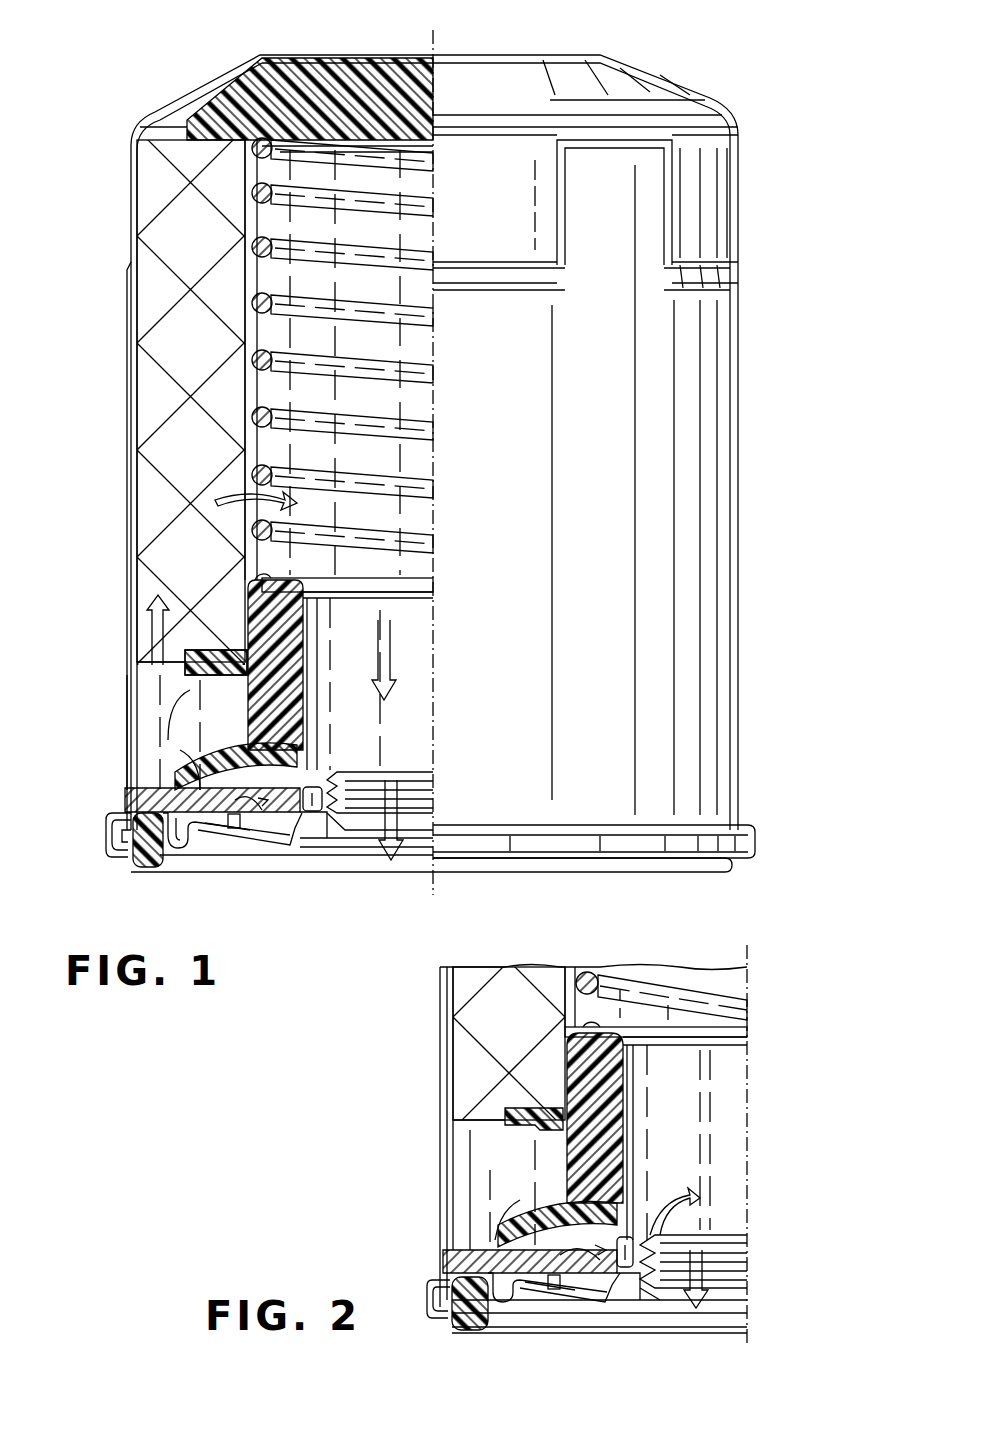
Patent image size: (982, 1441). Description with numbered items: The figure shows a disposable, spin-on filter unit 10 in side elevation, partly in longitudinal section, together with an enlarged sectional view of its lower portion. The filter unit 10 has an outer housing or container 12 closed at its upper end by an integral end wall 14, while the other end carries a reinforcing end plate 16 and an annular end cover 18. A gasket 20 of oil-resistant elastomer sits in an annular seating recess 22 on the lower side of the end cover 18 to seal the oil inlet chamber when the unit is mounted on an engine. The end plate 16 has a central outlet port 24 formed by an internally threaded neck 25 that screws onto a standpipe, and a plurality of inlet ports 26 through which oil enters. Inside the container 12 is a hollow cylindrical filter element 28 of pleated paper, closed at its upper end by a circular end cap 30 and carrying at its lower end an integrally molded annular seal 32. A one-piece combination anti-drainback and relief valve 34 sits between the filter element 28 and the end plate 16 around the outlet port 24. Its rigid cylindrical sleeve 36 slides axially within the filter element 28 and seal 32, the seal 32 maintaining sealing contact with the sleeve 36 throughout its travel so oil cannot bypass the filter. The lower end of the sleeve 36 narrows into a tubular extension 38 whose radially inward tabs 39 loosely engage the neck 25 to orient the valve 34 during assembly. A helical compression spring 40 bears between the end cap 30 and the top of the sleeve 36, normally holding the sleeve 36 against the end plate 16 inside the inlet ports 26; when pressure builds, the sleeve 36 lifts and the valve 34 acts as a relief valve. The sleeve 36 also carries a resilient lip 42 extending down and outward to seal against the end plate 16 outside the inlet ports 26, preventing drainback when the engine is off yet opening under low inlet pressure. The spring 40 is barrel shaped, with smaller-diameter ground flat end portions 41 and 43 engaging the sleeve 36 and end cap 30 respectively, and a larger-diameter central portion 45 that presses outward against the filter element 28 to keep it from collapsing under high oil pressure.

In FIG. 1, the filter unit 10 is at (818, 108).
In FIG. 1, the outer housing or container 12 is at (738, 370).
In FIG. 2, the outer housing or container 12 is at (593, 1150).
In FIG. 1, the end wall 14 is at (598, 62).
In FIG. 1, the reinforcing end plate 16 is at (143, 795).
In FIG. 2, the reinforcing end plate 16 is at (450, 1262).
In FIG. 1, the annular end cover 18 is at (196, 842).
In FIG. 2, the annular end cover 18 is at (547, 1287).
In FIG. 1, the gasket 20 is at (137, 858).
In FIG. 2, the gasket 20 is at (470, 1303).
In FIG. 1, the annular seating recess 22 is at (125, 817).
In FIG. 2, the annular seating recess 22 is at (438, 1299).
In FIG. 1, the outlet port 24 is at (410, 775).
In FIG. 2, the outlet port 24 is at (730, 1240).
In FIG. 1, the internally threaded neck 25 is at (353, 815).
In FIG. 2, the internally threaded neck 25 is at (667, 1282).
In FIG. 1, the inlet ports 26 is at (246, 823).
In FIG. 2, the inlet ports 26 is at (556, 1283).
In FIG. 1, the filter element 28 is at (145, 390).
In FIG. 2, the filter element 28 is at (470, 1012).
In FIG. 1, the end cap 30 is at (313, 62).
In FIG. 1, the annular seal 32 is at (200, 660).
In FIG. 2, the annular seal 32 is at (505, 1118).
In FIG. 1, the combination anti-drainback and relief valve 34 is at (243, 633).
In FIG. 2, the combination anti-drainback and relief valve 34 is at (632, 1125).
In FIG. 1, the sleeve 36 is at (297, 620).
In FIG. 2, the sleeve 36 is at (618, 1065).
In FIG. 1, the tubular extension 38 is at (300, 770).
In FIG. 2, the tubular extension 38 is at (630, 1255).
In FIG. 1, the tabs 39 is at (303, 833).
In FIG. 2, the tabs 39 is at (626, 1290).
In FIG. 1, the helical compression spring 40 is at (422, 284).
In FIG. 2, the helical compression spring 40 is at (658, 985).
In FIG. 1, the end portion 41 is at (363, 577).
In FIG. 2, the end portion 41 is at (712, 1030).
In FIG. 1, the resilient lip 42 is at (200, 768).
In FIG. 2, the resilient lip 42 is at (500, 1215).
In FIG. 1, the end portion 43 is at (383, 150).
In FIG. 1, the central portion 45 is at (400, 372).